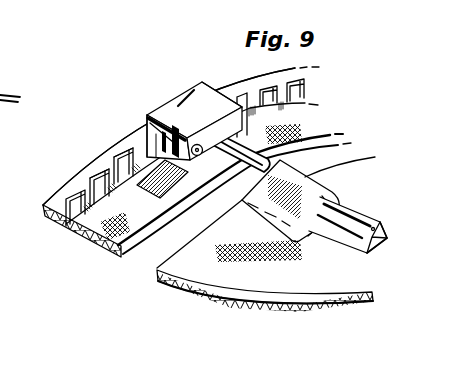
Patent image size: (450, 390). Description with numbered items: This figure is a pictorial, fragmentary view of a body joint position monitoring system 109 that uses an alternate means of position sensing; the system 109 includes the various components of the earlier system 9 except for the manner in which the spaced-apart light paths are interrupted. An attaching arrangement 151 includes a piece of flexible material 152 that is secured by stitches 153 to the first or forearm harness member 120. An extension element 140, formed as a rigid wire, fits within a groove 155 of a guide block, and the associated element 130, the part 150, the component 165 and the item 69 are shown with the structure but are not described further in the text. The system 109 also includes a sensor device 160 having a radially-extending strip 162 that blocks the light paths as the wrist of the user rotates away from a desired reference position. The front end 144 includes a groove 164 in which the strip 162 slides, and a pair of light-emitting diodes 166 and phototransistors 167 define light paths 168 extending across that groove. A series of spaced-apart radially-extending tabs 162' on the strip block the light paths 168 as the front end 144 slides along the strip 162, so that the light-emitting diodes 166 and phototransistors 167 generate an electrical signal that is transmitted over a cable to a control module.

The system 9 is at (0, 44).
The print head carriage 69 is at (8, 97).
The body joint position monitoring system 109 is at (118, 325).
The forearm harness member 120 is at (213, 276).
The carrier 130 is at (124, 242).
The extension element 140 is at (262, 182).
The front end 144 is at (165, 102).
The rod 150 is at (312, 240).
The attaching arrangement 151 is at (285, 268).
The flexible material 152 is at (250, 207).
The stitches 153 is at (272, 208).
The groove 155 is at (378, 222).
The sensor device 160 is at (85, 188).
The radially-extending strip 162 is at (153, 152).
The radially-extending tabs 162' is at (87, 154).
The groove 164 is at (146, 146).
The bracket top 165 is at (194, 90).
The light-emitting diodes 166 is at (201, 155).
The phototransistors 167 is at (212, 152).
The light paths 168 is at (212, 96).